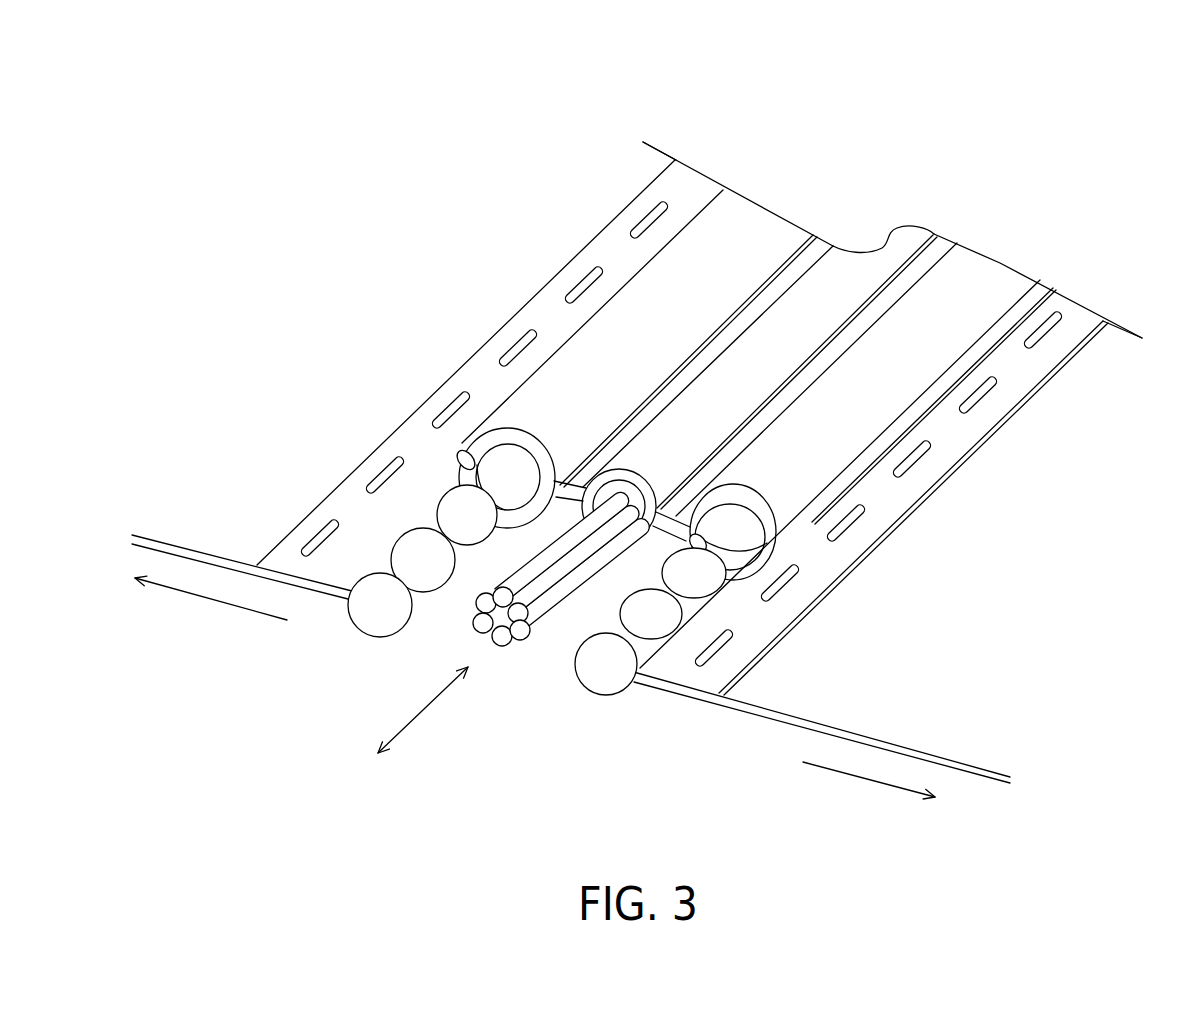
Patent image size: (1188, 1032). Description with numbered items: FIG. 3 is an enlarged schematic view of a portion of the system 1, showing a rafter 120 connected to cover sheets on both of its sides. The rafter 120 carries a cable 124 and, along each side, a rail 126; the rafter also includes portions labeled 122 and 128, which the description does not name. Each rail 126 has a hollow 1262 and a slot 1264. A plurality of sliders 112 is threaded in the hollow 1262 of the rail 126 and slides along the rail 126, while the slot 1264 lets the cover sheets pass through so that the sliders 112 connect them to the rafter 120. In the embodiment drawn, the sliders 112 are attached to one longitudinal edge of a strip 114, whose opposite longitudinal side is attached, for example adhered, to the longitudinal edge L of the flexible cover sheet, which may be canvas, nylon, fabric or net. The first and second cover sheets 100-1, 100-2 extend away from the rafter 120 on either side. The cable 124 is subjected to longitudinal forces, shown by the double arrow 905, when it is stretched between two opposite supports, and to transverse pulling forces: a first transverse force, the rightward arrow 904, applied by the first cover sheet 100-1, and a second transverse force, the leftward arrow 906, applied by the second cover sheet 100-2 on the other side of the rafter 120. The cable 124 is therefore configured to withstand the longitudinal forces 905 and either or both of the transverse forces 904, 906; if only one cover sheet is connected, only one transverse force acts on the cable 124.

The system 1 is at (323, 223).
The rafter 120 is at (1083, 122).
The strip 114 is at (688, 186).
The middle portion 122 is at (712, 382).
The rail 126 is at (682, 427).
The longitudinal edge L is at (1012, 470).
The ridge 128 is at (794, 266).
The cable 124 is at (557, 612).
The hollow 1262 is at (458, 452).
The slot 1264 is at (458, 462).
The sliders 112 is at (373, 622).
The first rail 100-1 is at (977, 737).
The second rail 100-2 is at (223, 543).
The rightward arrow 904 is at (863, 775).
The double arrow 905 is at (422, 716).
The leftward arrow 906 is at (214, 603).